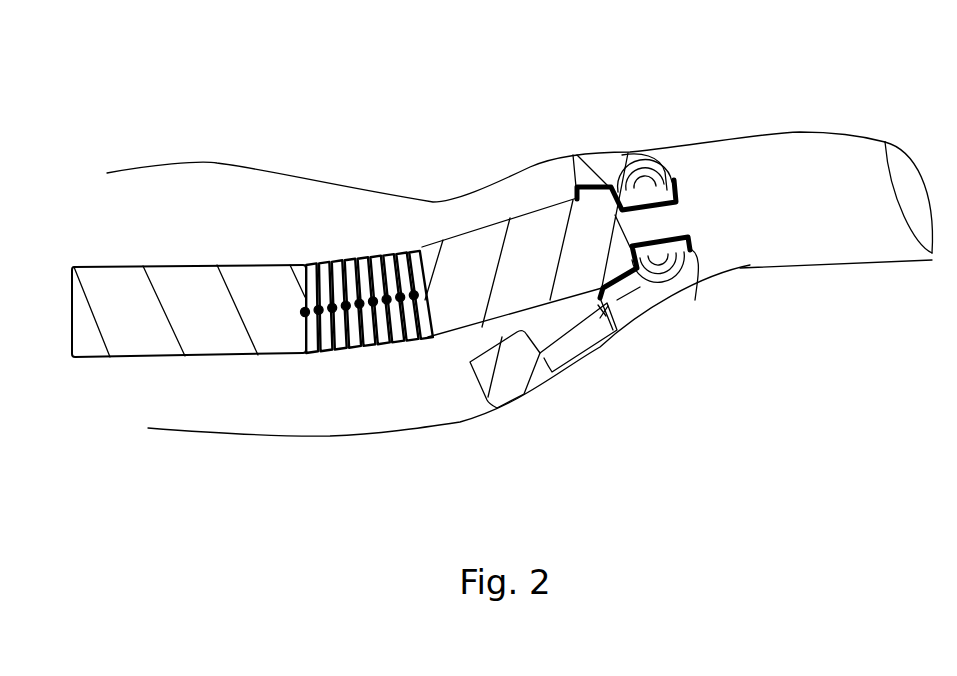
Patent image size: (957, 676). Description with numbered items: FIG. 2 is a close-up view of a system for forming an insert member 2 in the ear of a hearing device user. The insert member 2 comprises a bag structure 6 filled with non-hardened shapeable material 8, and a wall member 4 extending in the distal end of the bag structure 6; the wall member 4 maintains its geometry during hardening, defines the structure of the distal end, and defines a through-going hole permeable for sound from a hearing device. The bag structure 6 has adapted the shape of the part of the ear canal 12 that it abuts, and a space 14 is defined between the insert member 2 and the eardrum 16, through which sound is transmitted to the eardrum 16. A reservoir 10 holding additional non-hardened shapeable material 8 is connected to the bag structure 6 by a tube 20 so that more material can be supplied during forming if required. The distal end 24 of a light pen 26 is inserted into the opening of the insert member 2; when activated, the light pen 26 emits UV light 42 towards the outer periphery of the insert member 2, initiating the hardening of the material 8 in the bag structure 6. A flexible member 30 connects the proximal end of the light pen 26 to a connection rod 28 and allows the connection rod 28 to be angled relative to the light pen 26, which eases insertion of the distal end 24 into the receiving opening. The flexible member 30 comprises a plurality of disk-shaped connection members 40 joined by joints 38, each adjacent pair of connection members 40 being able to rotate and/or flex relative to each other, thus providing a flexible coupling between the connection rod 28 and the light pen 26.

The insert member 2 is at (648, 92).
The wall member 4 is at (660, 193).
The bag structure 6 is at (693, 262).
The non-hardened shapeable material 8 is at (642, 290).
The reservoir 10 is at (513, 385).
The ear canal 12 is at (422, 415).
The space 14 is at (773, 140).
The eardrum 16 is at (905, 150).
The tube 20 is at (580, 337).
The distal end of the light pen 24 is at (676, 207).
The light pen 26 is at (480, 242).
The connection rod 28 is at (203, 357).
The flexible member 30 is at (350, 216).
The joints 38 is at (335, 305).
The disk-shaped connection members 40 is at (357, 357).
The UV light 42 is at (686, 272).